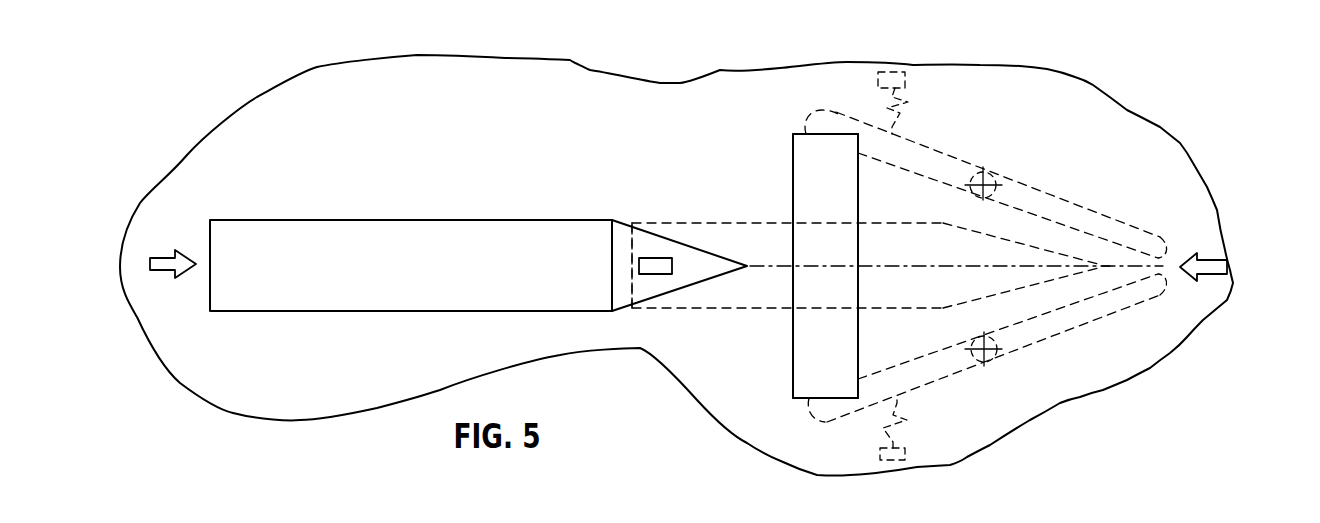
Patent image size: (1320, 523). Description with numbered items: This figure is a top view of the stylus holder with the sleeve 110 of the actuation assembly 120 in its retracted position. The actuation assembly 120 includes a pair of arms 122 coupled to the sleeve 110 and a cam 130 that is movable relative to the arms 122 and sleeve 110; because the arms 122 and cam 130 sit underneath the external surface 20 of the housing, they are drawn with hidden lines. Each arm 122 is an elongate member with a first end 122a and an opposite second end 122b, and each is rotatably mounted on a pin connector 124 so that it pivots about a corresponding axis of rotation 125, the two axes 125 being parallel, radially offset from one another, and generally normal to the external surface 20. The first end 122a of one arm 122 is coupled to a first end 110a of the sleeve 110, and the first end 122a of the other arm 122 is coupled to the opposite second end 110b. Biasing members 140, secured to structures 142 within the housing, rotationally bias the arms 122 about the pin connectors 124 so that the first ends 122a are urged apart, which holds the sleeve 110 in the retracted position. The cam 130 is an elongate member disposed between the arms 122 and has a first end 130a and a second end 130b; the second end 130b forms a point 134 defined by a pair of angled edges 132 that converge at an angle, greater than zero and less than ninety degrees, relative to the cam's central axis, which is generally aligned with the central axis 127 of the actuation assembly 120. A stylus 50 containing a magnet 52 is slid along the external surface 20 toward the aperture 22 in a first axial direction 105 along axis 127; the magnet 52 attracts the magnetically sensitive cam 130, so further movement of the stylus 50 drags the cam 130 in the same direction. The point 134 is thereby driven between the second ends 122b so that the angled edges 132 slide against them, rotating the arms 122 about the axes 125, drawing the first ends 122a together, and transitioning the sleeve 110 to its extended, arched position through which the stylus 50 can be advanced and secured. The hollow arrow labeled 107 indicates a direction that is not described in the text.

The external surface 20 is at (280, 95).
The first axial direction 105 is at (171, 255).
The stylus 50 is at (491, 220).
The magnet 52 is at (656, 257).
The cam 130 is at (708, 222).
The first end of cam 130a is at (632, 313).
The second end of cam 130b is at (1101, 262).
The central axis of actuation assembly 127 is at (785, 268).
The aperture 22 is at (790, 191).
The sleeve 110 is at (858, 197).
The first end of sleeve 110a is at (841, 131).
The second end of sleeve 110b is at (840, 401).
The first end of arm 122a is at (808, 116).
The arms 122 is at (1037, 188).
The second end of arm 122b is at (1165, 235).
The angled edges 132 is at (1040, 248).
The point 134 is at (1104, 267).
The pin connectors 124 is at (985, 180).
The axis of rotation 125 is at (980, 198).
The biasing members 140 is at (905, 113).
The structures 142 is at (900, 73).
The actuation assembly 120 is at (766, 88).
The outlet flow direction 107 is at (1205, 282).